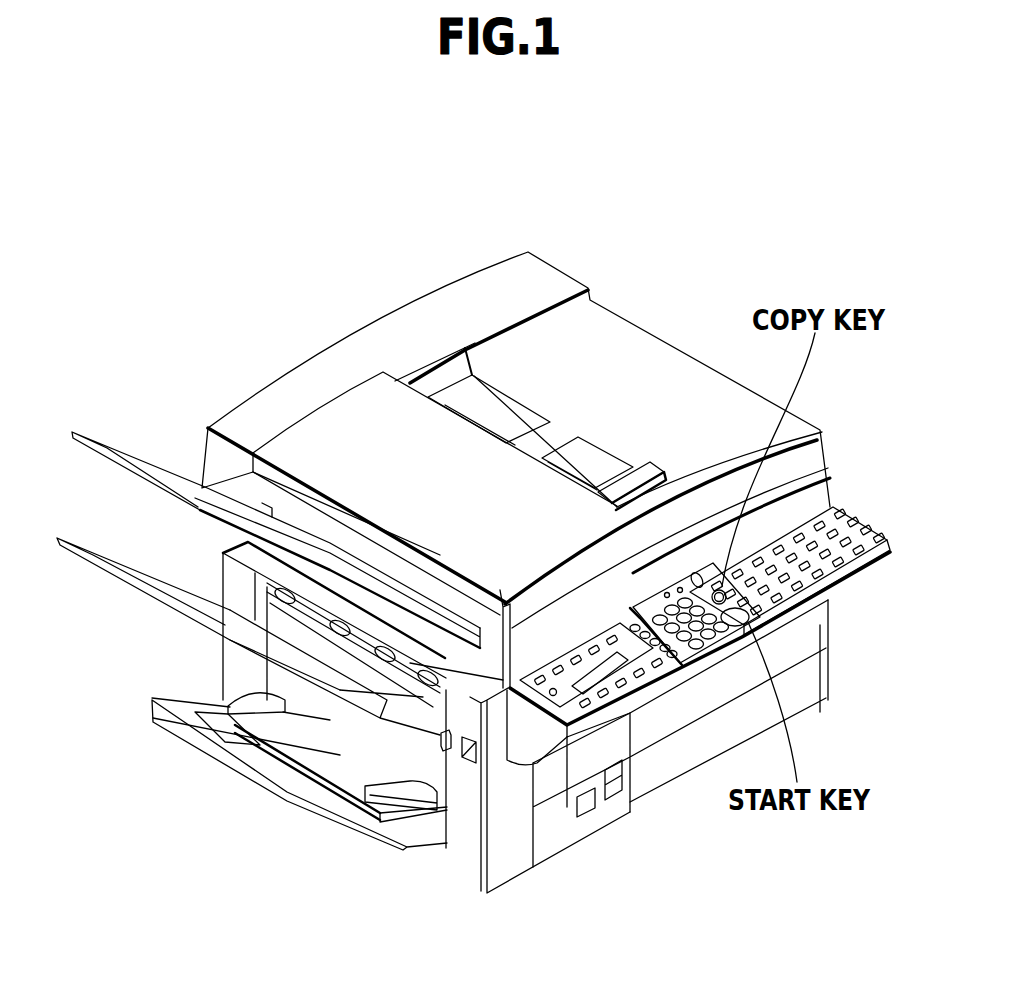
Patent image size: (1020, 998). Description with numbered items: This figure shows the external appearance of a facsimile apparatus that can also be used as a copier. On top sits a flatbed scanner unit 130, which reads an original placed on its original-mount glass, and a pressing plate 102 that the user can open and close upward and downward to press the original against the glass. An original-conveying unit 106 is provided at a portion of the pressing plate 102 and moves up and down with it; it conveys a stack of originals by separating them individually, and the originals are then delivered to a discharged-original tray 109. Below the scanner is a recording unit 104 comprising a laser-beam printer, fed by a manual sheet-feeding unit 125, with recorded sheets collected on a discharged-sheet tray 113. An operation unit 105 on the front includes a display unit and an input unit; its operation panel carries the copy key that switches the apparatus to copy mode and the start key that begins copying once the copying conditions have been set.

The pressing plate 102 is at (640, 365).
The recording unit 104 is at (552, 773).
The operation unit 105 is at (852, 530).
The original-conveying unit 106 is at (360, 407).
The discharged-original tray 109 is at (173, 483).
The discharged-sheet tray 113 is at (102, 553).
The manual sheet-feeding unit 125 is at (307, 787).
The flatbed scanner unit 130 is at (812, 447).